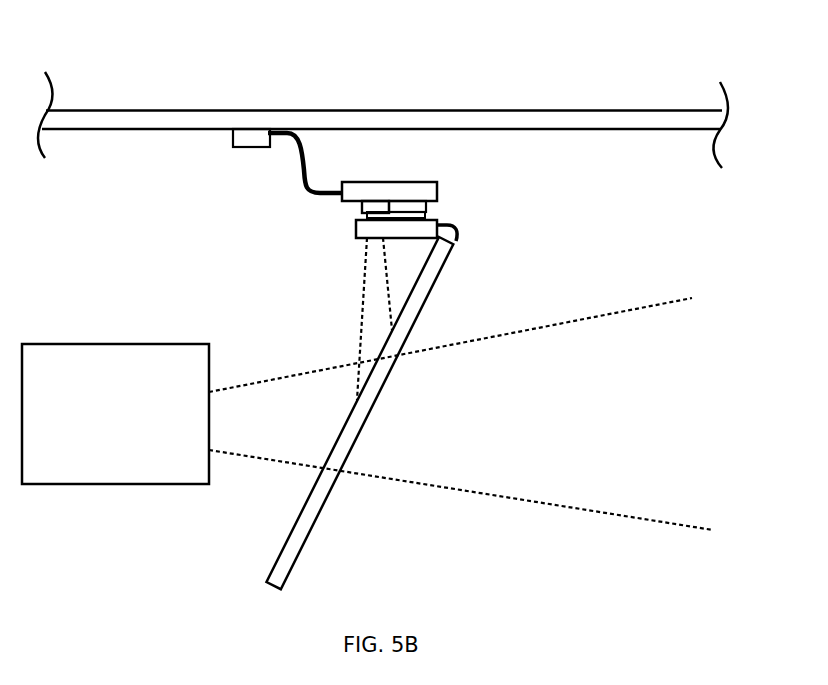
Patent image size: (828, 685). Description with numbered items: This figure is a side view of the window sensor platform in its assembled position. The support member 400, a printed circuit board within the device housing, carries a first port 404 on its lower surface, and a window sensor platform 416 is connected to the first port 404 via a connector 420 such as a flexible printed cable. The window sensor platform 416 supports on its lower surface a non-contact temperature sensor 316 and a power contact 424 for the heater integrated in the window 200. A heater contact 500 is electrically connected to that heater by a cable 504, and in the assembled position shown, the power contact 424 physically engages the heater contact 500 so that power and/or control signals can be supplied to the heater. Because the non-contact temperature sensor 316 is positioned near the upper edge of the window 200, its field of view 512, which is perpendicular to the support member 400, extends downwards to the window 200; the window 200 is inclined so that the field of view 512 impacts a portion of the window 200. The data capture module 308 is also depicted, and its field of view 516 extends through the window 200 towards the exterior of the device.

The support member 400 is at (438, 103).
The first port 404 is at (233, 138).
The connector 420 is at (302, 176).
The window sensor platform 416 is at (437, 190).
The power contact 424 is at (426, 208).
The non-contact temperature sensor 316 is at (357, 207).
The heater contact 500 is at (438, 222).
The cable 504 is at (458, 232).
The field of view 512 is at (362, 297).
The window 200 is at (313, 532).
The data capture module 308 is at (134, 426).
The field of view 516 is at (673, 525).